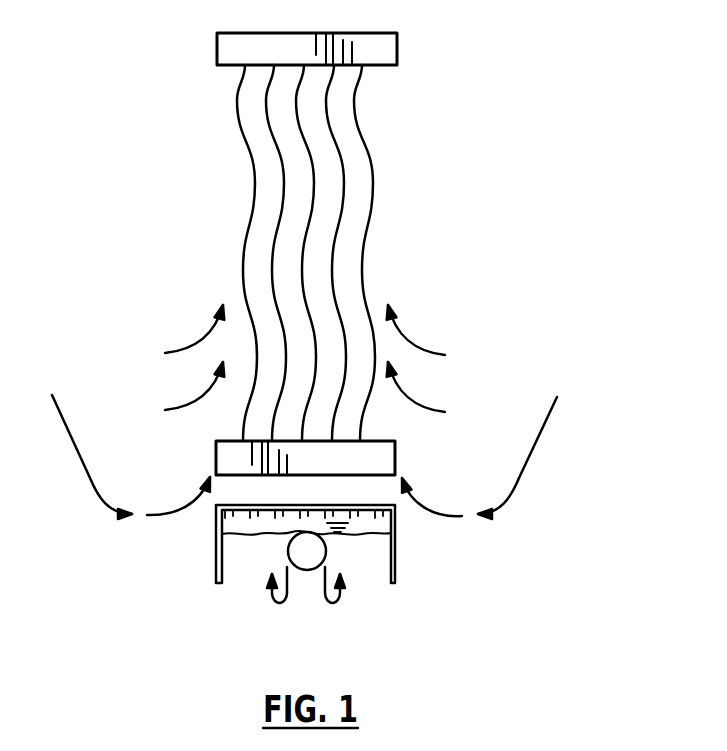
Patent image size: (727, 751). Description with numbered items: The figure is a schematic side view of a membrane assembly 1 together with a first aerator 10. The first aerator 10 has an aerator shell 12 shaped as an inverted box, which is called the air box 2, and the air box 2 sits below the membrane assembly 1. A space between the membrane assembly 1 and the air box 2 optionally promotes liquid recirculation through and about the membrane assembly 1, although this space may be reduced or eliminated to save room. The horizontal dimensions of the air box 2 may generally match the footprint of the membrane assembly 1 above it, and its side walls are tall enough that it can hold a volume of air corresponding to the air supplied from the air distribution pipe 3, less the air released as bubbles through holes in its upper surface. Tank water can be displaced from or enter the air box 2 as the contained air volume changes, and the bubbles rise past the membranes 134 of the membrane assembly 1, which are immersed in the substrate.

The membrane assembly 1 is at (385, 47).
The membranes 134 is at (363, 237).
The first aerator 10 is at (490, 559).
The air box 2 is at (395, 557).
The aerator shell 12 is at (391, 533).
The air distribution pipe 3 is at (328, 563).